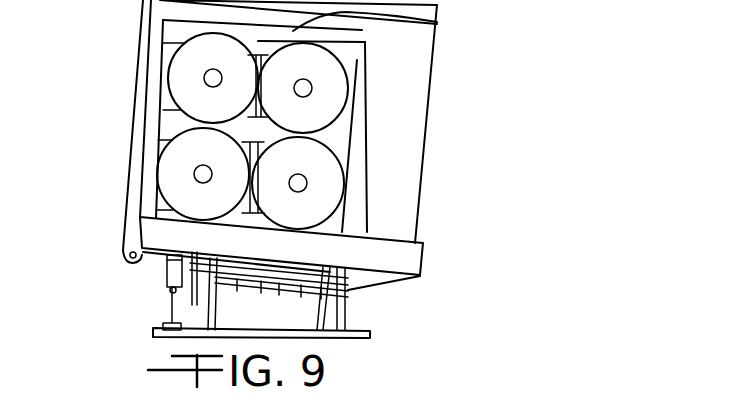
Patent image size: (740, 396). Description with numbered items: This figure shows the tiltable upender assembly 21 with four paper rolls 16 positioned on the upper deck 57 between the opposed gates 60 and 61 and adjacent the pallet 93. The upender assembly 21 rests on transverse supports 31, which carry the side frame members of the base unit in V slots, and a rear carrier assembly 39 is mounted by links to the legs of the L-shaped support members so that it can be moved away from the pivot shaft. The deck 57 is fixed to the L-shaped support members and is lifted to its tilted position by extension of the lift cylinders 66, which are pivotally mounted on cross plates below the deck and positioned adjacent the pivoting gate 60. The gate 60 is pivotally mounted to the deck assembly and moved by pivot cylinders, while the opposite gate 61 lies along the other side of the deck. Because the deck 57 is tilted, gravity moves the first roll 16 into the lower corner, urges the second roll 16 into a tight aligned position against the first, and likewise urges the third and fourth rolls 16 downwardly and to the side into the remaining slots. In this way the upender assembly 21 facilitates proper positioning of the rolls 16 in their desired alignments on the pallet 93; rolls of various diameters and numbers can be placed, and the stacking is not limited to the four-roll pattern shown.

The paper roll 16 is at (160, 28).
The tiltable upender assembly 21 is at (430, 88).
The transverse supports 31 is at (358, 340).
The rear carrier assembly 39 is at (137, 76).
The upper deck 57 is at (330, 220).
The pivoting gate 60 is at (133, 128).
The gate 61 is at (365, 140).
The lift cylinders 66 is at (163, 272).
The pallet 93 is at (436, 26).